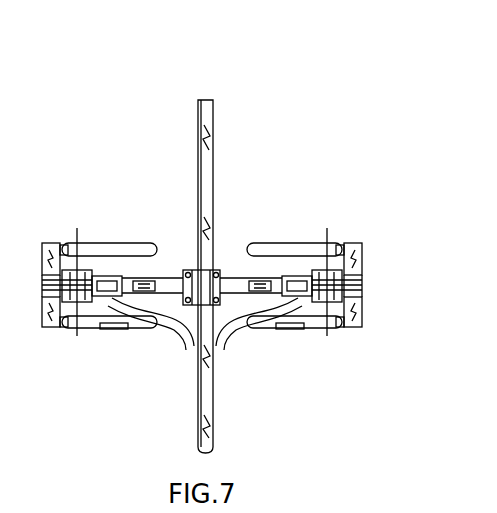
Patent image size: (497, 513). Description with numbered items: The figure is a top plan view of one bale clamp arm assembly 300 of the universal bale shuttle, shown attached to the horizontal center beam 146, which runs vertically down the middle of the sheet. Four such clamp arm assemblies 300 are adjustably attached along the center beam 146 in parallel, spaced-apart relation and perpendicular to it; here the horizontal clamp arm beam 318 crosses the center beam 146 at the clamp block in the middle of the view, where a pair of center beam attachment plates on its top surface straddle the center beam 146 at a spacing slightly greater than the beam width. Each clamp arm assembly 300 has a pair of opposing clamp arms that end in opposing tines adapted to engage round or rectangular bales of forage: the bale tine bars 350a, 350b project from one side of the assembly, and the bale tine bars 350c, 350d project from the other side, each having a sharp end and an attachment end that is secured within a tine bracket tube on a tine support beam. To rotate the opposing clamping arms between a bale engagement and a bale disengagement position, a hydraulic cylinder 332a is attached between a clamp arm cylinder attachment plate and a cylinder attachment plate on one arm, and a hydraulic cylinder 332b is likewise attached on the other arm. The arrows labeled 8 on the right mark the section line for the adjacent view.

The horizontal center beam 146 is at (215, 113).
The clamp arm assembly 300 is at (263, 198).
The horizontal clamp arm beam 318 is at (186, 348).
The hydraulic cylinder 332a is at (290, 328).
The hydraulic cylinder 332b is at (114, 328).
The bale tine bar 350a is at (254, 326).
The bale tine bar 350b is at (273, 248).
The bale tine bar 350c is at (141, 327).
The bale tine bar 350d is at (150, 243).
The section line 8- 8 is at (413, 150).